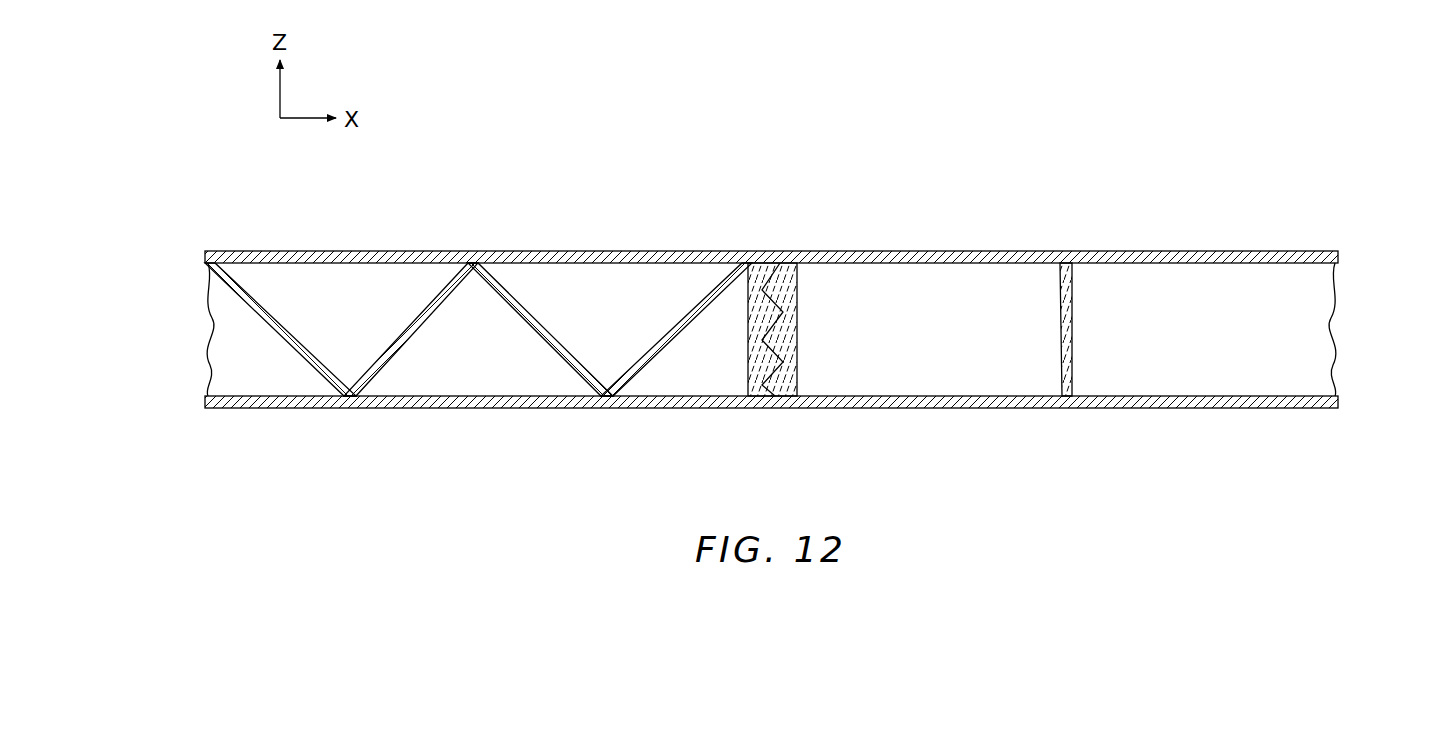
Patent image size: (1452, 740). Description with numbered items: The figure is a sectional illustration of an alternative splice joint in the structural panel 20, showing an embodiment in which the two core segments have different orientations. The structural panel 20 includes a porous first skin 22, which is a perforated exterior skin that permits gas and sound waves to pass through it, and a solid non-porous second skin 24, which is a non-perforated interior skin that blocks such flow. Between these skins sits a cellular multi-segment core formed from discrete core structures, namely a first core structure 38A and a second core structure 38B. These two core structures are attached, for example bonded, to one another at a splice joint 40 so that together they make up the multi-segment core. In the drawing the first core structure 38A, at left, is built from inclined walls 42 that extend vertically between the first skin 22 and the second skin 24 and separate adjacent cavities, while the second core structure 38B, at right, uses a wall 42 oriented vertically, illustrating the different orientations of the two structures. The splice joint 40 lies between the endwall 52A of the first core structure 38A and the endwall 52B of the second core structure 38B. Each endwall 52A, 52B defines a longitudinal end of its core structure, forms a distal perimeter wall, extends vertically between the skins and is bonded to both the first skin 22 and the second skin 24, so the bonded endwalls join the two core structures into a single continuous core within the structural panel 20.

The structural panel 20 is at (1220, 202).
The first skin 22 is at (203, 252).
The second skin 24 is at (204, 411).
The first core structure 38A is at (190, 263).
The second core structure 38B is at (1348, 263).
The splice joint 40 is at (781, 226).
The wall 42 is at (1072, 376).
The endwall 52A is at (748, 366).
The endwall 52B is at (797, 352).